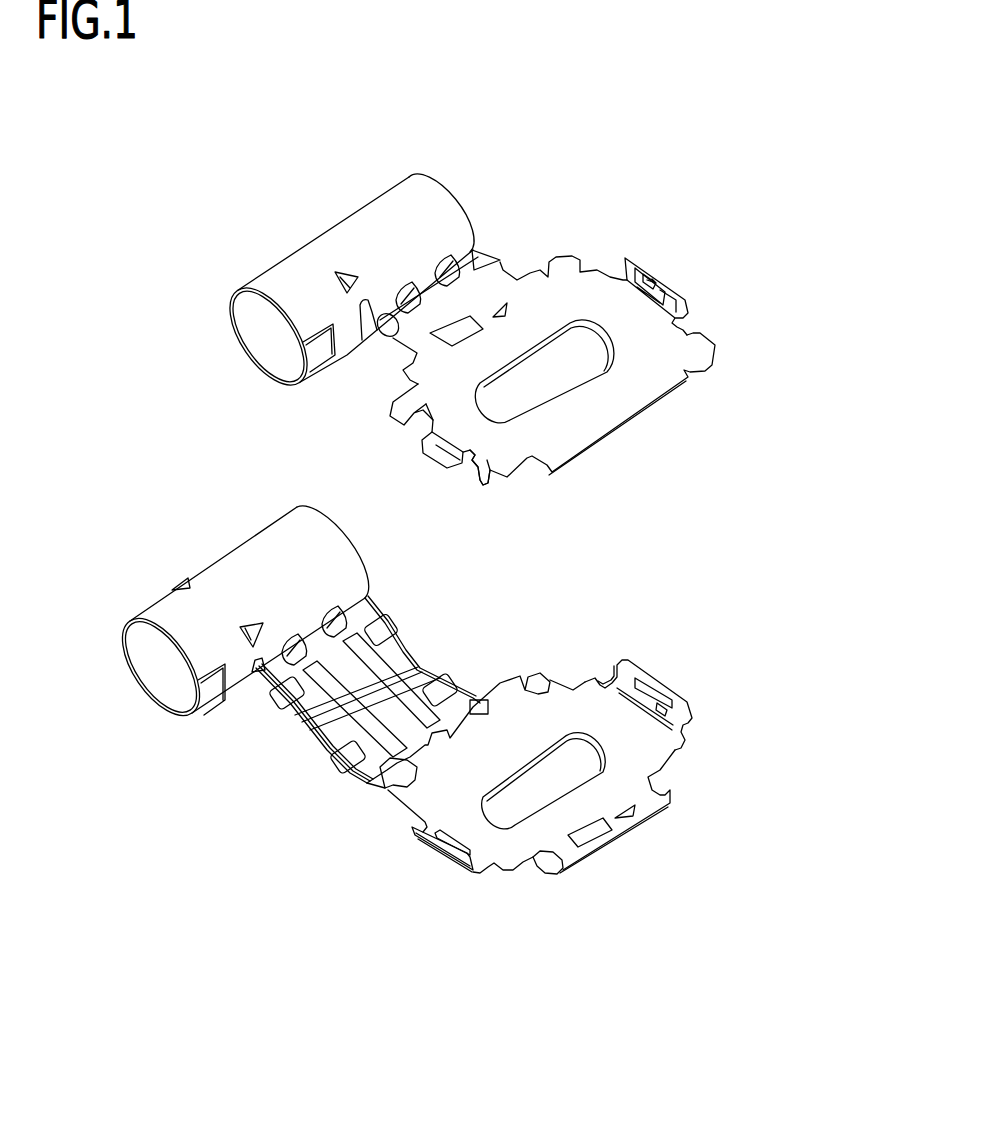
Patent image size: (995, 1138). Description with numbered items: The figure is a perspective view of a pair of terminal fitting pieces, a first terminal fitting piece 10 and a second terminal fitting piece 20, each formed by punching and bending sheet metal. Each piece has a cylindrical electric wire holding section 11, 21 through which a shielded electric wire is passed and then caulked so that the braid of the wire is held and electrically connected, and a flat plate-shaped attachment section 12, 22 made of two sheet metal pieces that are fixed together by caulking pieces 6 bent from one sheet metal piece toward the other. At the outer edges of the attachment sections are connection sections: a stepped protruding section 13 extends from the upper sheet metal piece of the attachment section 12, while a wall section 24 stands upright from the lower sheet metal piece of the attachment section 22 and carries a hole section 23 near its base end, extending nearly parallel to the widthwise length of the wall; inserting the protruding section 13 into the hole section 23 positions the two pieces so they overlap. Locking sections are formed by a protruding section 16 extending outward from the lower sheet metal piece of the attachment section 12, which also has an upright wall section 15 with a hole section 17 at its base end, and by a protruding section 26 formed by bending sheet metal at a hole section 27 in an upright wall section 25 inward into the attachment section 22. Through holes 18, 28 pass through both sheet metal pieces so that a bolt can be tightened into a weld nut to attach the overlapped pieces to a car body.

The caulking pieces 6 is at (397, 414).
The first terminal fitting piece 10 is at (528, 360).
The electric wire holding section 11 is at (297, 272).
The attachment section 12 is at (583, 277).
The protruding section 13 is at (430, 444).
The wall section 15 is at (630, 262).
The protruding section 16 is at (687, 292).
The hole section 17 is at (671, 283).
The through hole 18 is at (552, 378).
The second terminal fitting piece 20 is at (457, 691).
The electric wire holding section 21 is at (223, 578).
The attachment section 22 is at (507, 700).
The hole section 23 is at (462, 840).
The wall section 24 is at (417, 832).
The wall section 25 is at (637, 678).
The protruding section 26 is at (690, 693).
The hole section 27 is at (693, 727).
The through hole 28 is at (588, 757).